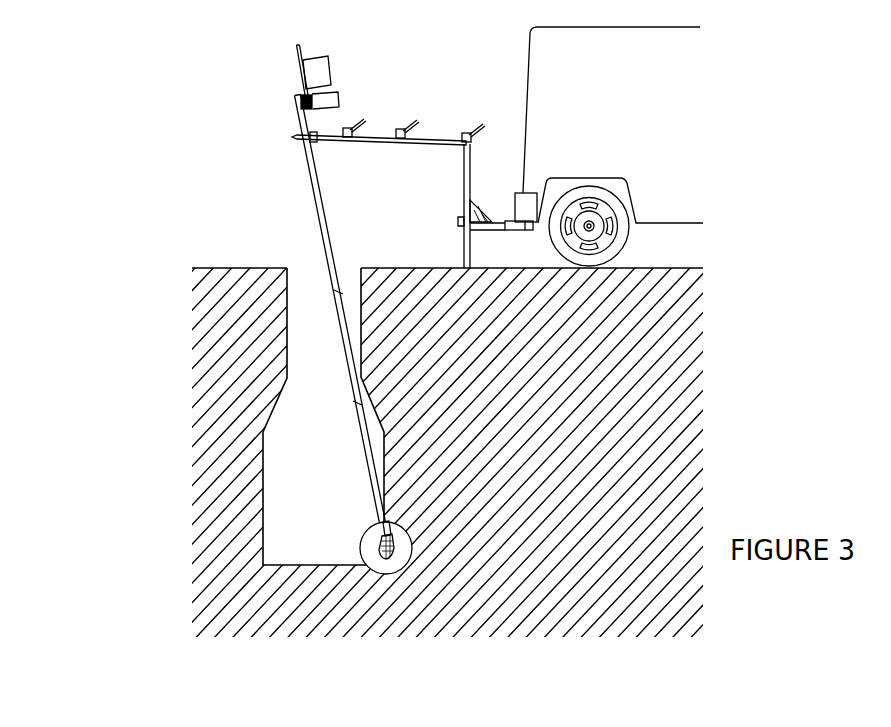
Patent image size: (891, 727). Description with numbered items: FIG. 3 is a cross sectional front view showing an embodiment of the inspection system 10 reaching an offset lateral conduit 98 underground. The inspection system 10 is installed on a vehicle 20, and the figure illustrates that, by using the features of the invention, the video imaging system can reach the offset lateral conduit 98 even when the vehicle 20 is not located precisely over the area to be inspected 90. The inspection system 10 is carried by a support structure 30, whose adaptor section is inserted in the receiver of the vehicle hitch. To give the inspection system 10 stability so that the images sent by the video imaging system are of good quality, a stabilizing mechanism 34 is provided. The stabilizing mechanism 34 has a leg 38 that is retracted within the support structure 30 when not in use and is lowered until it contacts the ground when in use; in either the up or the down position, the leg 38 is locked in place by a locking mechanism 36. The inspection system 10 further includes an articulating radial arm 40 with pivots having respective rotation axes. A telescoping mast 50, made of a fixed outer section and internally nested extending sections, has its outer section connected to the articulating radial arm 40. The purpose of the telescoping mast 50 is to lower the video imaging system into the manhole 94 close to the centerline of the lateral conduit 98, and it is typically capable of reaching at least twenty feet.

The inspection system 10 is at (352, 60).
The vehicle 20 is at (526, 52).
The support structure 30 is at (471, 209).
The stabilizing mechanism 34 is at (438, 145).
The locking mechanism 36 is at (456, 220).
The leg 38 is at (462, 250).
The articulating radial arm 40 is at (328, 132).
The telescoping mast 50 is at (303, 70).
The area to be inspected 90 is at (232, 540).
The manhole 94 is at (306, 351).
The offset lateral conduit 98 is at (410, 566).